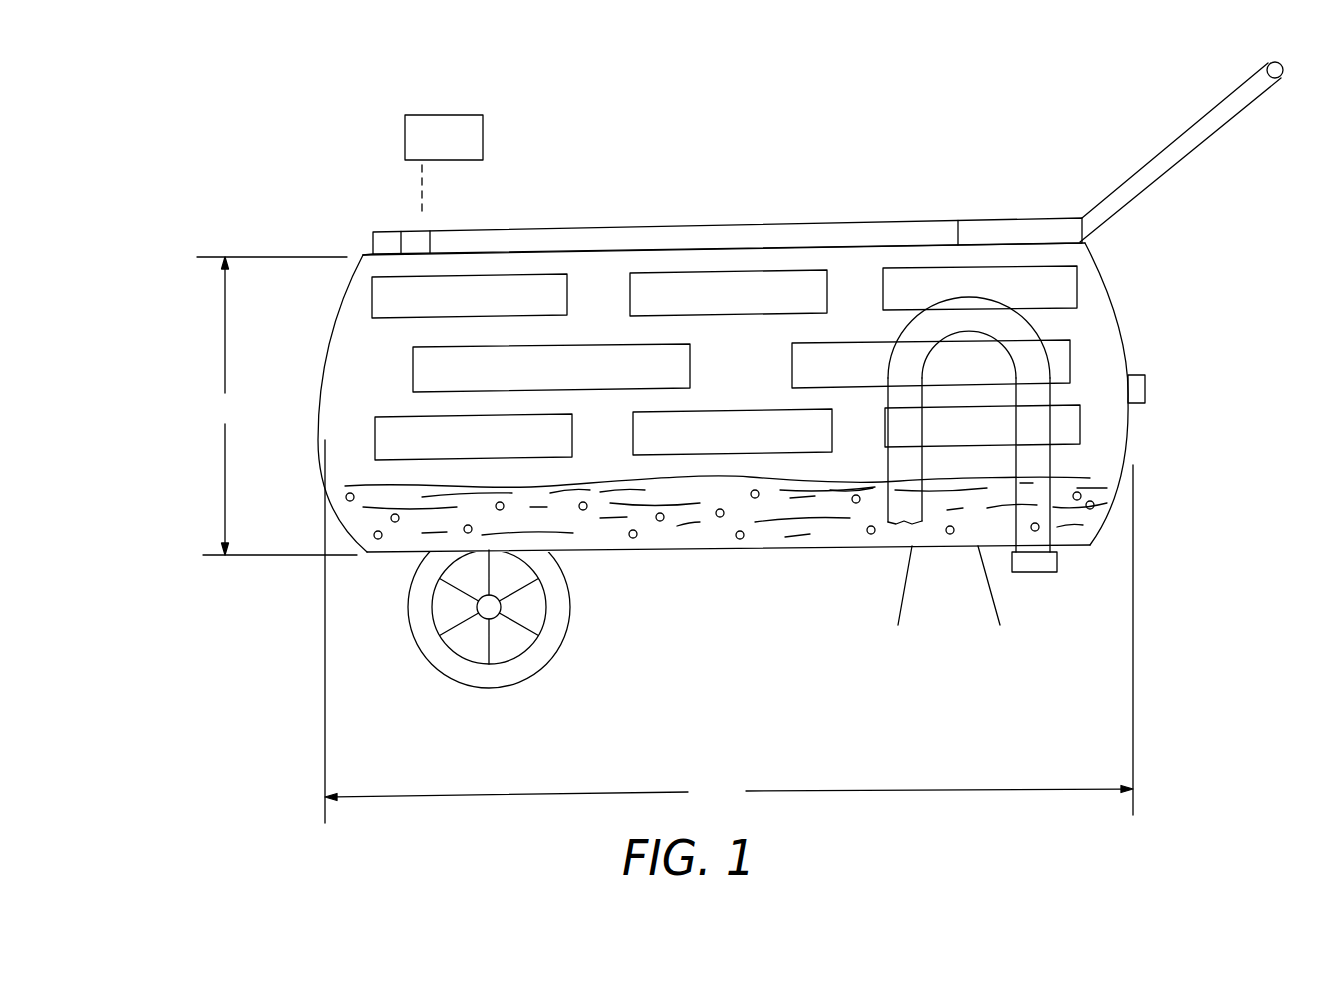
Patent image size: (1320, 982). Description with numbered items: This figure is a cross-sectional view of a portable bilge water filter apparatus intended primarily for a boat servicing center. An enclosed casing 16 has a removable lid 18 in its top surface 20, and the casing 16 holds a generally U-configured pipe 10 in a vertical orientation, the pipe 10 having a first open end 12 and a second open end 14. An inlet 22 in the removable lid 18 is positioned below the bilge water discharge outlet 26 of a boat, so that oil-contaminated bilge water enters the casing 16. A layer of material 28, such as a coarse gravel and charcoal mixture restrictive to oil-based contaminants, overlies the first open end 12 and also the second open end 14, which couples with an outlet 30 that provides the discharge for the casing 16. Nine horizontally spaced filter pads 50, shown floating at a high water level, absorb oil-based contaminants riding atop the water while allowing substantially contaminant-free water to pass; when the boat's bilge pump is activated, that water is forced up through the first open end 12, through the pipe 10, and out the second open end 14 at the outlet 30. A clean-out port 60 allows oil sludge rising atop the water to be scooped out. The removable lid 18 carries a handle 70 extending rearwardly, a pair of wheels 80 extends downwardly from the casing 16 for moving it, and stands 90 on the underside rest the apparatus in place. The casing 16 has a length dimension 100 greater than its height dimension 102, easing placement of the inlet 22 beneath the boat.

The U-configured pipe 10 is at (1050, 463).
The first open end 12 is at (908, 527).
The second open end 14 is at (1048, 572).
The casing 16 is at (318, 357).
The removable lid 18 is at (372, 243).
The top surface 20 is at (384, 256).
The inlet 22 is at (417, 243).
The bilge water discharge outlet 26 is at (485, 123).
The layer of material 28 is at (1085, 525).
The outlet 30 is at (1012, 548).
The filter pads 50 is at (713, 292).
The clean-out port 60 is at (1146, 394).
The handle 70 is at (1251, 84).
The wheels 80 is at (492, 690).
The stands 90 is at (905, 595).
The length dimension 100 is at (729, 631).
The height dimension 102 is at (274, 406).